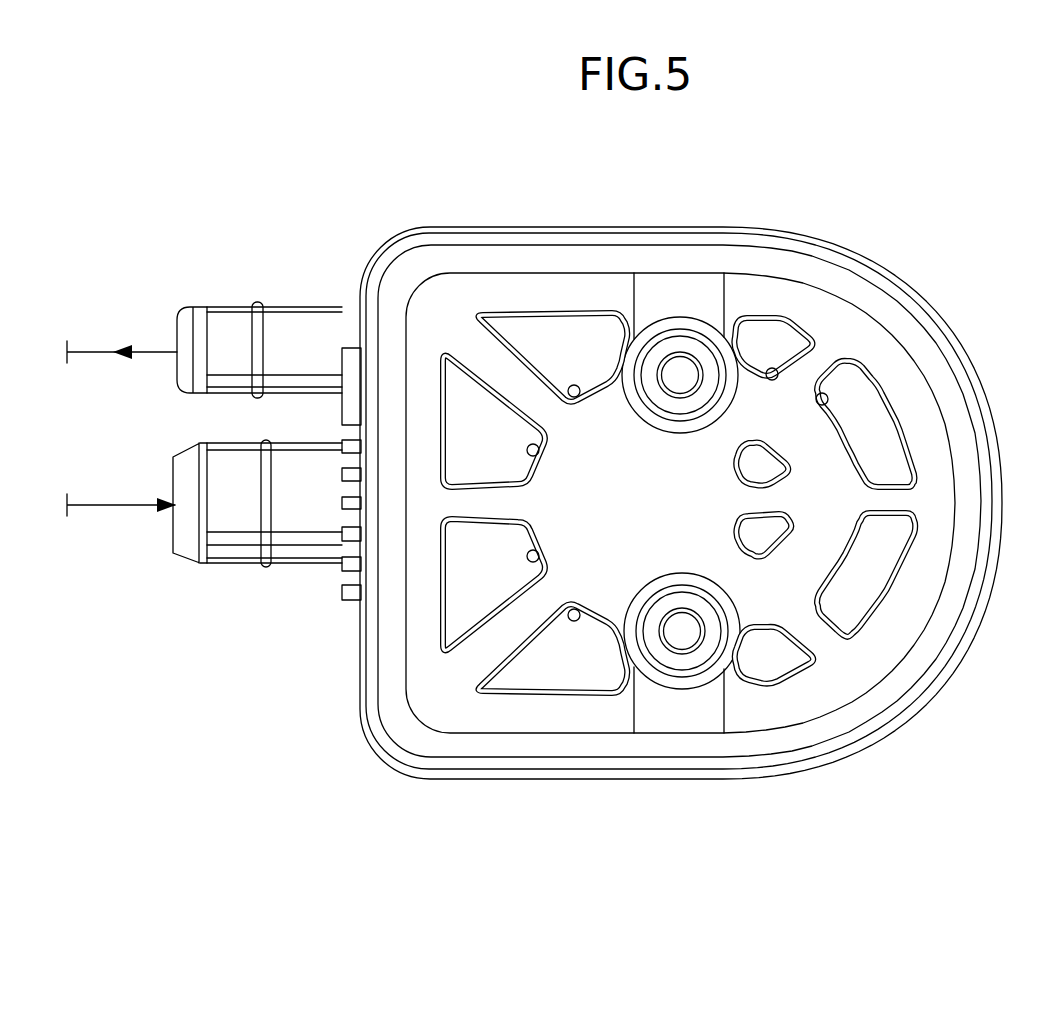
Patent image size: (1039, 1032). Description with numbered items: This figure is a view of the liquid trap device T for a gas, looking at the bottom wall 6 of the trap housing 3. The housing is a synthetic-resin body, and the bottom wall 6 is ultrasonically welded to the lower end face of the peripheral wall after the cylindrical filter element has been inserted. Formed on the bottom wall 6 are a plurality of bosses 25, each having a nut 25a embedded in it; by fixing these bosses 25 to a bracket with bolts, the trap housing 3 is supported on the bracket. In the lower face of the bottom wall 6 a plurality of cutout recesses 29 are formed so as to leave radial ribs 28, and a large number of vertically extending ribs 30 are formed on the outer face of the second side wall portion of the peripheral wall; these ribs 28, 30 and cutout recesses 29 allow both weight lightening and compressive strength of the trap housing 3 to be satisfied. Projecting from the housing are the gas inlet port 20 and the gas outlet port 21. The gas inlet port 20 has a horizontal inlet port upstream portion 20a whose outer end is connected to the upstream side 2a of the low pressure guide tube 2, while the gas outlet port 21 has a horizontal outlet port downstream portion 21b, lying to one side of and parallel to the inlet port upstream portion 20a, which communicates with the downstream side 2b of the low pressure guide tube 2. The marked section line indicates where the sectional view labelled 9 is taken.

The liquid trap device T is at (877, 264).
The low pressure guide tube 2 is at (113, 342).
The upstream side of the low pressure guide tube 2a is at (118, 510).
The downstream side of the low pressure guide tube 2b is at (139, 355).
The trap housing 3 is at (984, 387).
The bottom wall 6 is at (788, 268).
The section line IX-IX 9 is at (680, 137).
The gas inlet port 20 is at (233, 559).
The inlet port upstream portion 20a is at (301, 552).
The gas outlet port 21 is at (222, 306).
The outlet port downstream portion 21b is at (313, 325).
The boss 25 is at (684, 427).
The nut 25a is at (679, 338).
The radial rib 28 is at (512, 383).
The cutout recess 29 is at (569, 398).
The vertically extending rib 30 is at (346, 503).